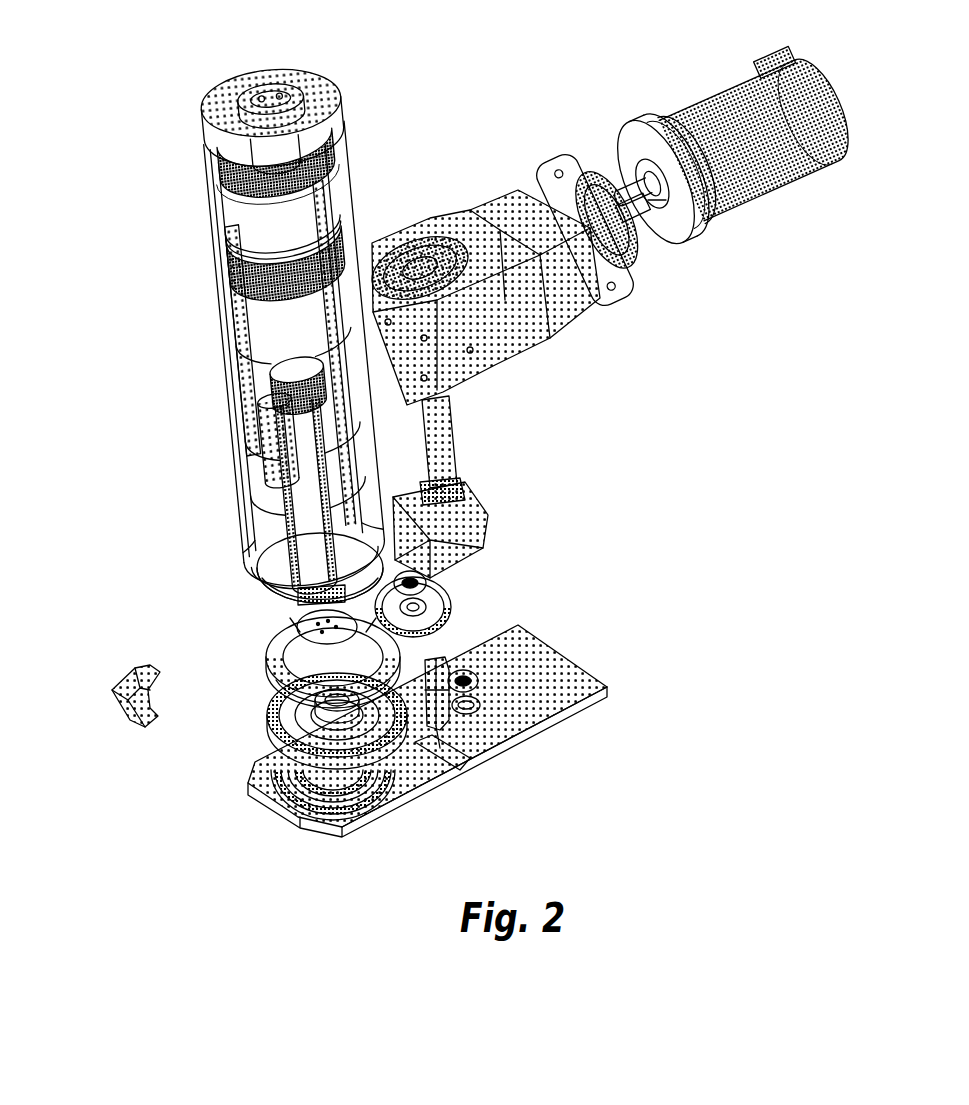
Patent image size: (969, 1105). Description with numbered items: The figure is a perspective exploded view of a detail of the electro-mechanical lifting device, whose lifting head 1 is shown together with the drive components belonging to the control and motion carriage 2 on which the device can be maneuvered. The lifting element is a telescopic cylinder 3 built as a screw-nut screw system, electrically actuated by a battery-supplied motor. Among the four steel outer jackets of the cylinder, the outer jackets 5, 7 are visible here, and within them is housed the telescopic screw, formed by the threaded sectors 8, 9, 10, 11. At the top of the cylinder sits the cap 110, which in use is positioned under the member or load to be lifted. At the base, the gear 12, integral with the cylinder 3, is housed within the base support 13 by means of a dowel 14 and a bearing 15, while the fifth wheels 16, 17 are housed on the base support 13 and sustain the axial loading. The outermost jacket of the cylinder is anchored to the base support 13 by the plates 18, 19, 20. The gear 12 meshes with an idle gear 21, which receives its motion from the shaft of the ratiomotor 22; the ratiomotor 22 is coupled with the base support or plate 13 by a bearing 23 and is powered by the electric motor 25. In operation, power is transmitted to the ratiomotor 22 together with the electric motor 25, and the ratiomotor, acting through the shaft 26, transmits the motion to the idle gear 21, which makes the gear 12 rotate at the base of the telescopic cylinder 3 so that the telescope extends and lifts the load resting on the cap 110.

The lifting head 1 is at (212, 518).
The control and motion carriage 2 is at (770, 292).
The telescopic cylinder 3 is at (190, 326).
The steel outer jacket 5 is at (232, 396).
The steel outer jacket 7 is at (222, 190).
The threaded sector 8 is at (236, 452).
The threaded sector 9 is at (300, 573).
The threaded sector 10 is at (222, 250).
The threaded sector 11 is at (222, 355).
The gear 12 is at (262, 682).
The base support 13 is at (517, 643).
The dowel 14 is at (267, 660).
The bearing 15 is at (278, 733).
The fifth wheel 16 is at (410, 745).
The fifth wheel 17 is at (477, 753).
The plate 18 is at (113, 684).
The plate 19 is at (447, 660).
The plate 20 is at (305, 610).
The idle gear 21 is at (448, 598).
The ratiomotor 22 is at (500, 222).
The bearing 23 is at (481, 678).
The electric motor 25 is at (728, 98).
The shaft 26 is at (457, 440).
The cap 110 is at (308, 90).